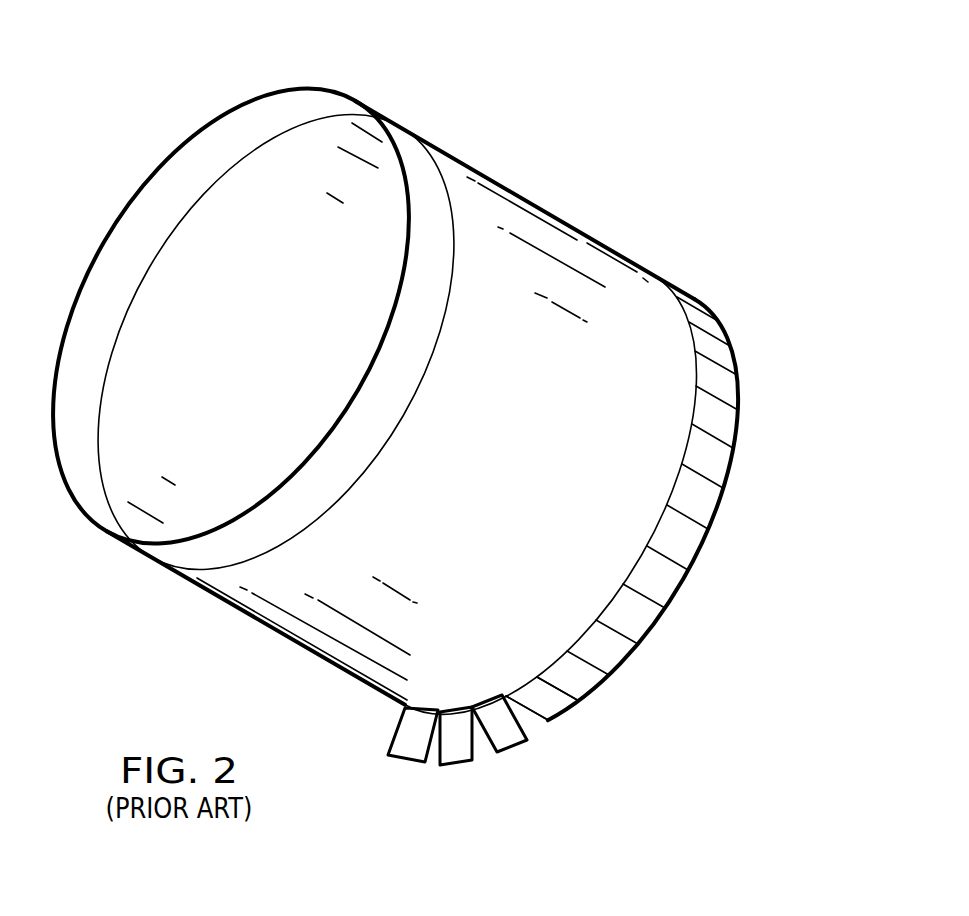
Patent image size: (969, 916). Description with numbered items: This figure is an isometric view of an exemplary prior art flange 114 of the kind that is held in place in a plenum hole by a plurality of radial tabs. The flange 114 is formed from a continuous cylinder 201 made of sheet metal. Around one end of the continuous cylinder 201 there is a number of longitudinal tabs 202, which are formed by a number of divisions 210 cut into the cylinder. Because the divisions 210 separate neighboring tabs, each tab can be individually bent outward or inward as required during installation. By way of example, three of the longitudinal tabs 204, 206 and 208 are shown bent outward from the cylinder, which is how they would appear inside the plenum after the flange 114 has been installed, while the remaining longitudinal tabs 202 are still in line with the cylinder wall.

The flange 114 is at (586, 93).
The continuous cylinder 201 is at (574, 255).
The longitudinal tabs 202 is at (700, 562).
The longitudinal tab 204 is at (515, 750).
The longitudinal tab 206 is at (455, 766).
The longitudinal tab 208 is at (403, 763).
The divisions 210 is at (578, 705).